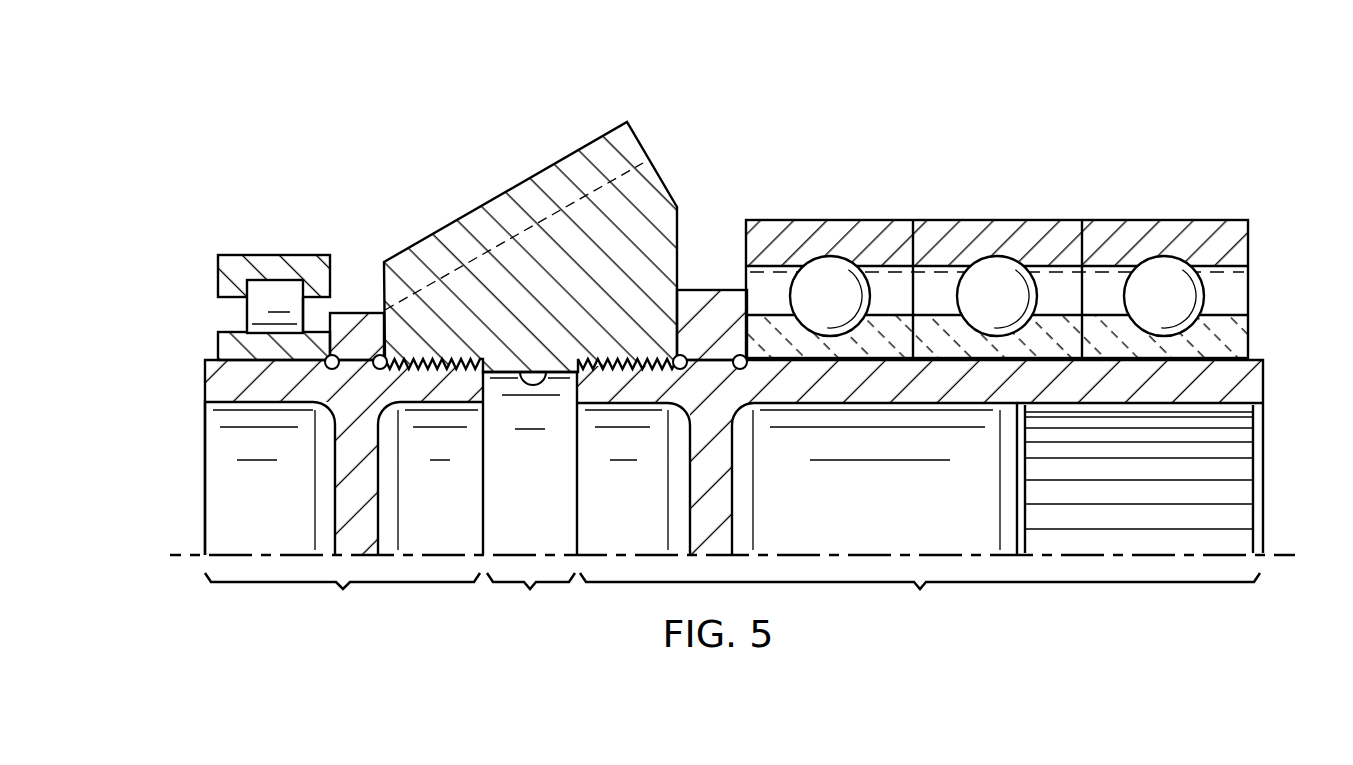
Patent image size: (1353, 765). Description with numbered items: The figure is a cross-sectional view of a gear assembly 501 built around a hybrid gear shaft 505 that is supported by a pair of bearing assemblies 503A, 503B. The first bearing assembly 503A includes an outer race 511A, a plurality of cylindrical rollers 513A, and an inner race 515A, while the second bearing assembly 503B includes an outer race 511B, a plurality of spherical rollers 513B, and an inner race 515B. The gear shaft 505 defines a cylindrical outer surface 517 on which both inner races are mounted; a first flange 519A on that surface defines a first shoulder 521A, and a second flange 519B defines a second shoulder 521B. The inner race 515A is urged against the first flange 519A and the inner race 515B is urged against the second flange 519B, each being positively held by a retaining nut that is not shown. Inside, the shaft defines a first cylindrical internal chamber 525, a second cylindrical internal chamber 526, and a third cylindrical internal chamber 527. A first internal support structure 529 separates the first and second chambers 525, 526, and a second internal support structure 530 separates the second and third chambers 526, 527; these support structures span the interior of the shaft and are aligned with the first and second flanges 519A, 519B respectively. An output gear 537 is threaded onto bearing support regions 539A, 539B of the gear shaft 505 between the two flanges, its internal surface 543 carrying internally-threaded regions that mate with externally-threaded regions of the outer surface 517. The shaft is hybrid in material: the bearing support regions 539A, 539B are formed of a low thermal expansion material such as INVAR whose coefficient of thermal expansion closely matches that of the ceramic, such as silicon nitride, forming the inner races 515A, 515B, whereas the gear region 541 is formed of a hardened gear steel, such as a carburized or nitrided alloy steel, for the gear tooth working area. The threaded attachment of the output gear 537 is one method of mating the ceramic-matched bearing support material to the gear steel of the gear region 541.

The gear assembly 501 is at (312, 78).
The bearing assembly 503A is at (172, 218).
The bearing assembly 503B is at (1279, 170).
The gear shaft 505 is at (171, 419).
The outer race 511A is at (247, 262).
The outer race 511B is at (1030, 228).
The rollers 513A is at (255, 307).
The rollers 513B is at (1197, 302).
The inner race 515A is at (227, 350).
The inner race 515B is at (1242, 328).
The cylindrical outer surface 517 is at (263, 352).
The first flange 519A is at (350, 323).
The second flange 519B is at (725, 297).
The first shoulder 521A is at (304, 290).
The second shoulder 521B is at (760, 292).
The first cylindrical internal chamber 525 is at (236, 520).
The second cylindrical internal chamber 526 is at (552, 501).
The third cylindrical internal chamber 527 is at (903, 521).
The first internal support structure 529 is at (382, 515).
The second internal support structure 530 is at (690, 483).
The output gear 537 is at (637, 136).
The bearing support region 539A is at (342, 598).
The bearing support region 539B is at (920, 598).
The gear region 541 is at (531, 598).
The internal surface 543 is at (528, 361).